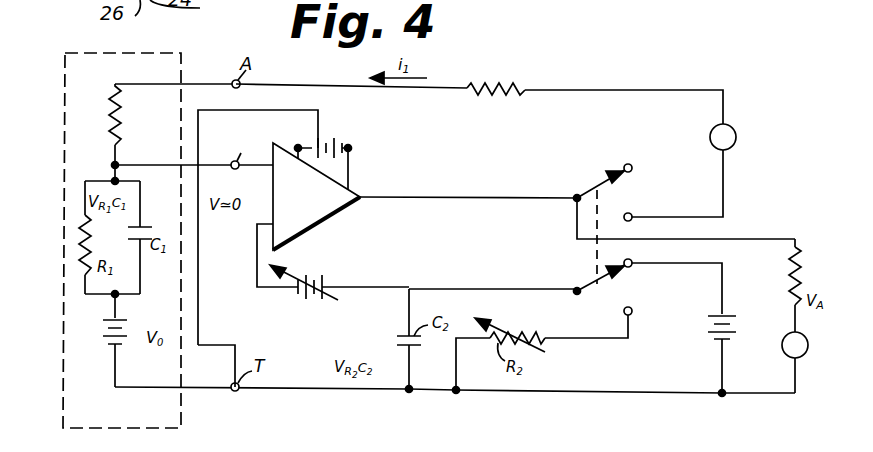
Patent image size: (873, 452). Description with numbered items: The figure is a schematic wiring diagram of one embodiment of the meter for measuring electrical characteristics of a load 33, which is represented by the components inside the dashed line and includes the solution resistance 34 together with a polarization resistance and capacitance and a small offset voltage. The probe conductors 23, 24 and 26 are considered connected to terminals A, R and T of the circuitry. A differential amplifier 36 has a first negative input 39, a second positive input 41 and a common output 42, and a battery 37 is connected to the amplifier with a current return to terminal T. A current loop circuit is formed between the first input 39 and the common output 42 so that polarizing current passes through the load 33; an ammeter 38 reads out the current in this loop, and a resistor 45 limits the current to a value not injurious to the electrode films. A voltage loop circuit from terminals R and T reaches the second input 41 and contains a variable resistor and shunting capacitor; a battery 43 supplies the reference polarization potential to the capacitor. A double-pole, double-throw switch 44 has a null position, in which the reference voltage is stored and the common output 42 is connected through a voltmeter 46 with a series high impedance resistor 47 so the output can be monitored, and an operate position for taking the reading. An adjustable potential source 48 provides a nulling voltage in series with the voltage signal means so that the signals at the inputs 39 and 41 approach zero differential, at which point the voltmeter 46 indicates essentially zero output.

The conductor 23 is at (138, 89).
The conductor 24 is at (132, 167).
The conductor 26 is at (131, 393).
The load 33 is at (64, 94).
The solution resistance 34 is at (108, 132).
The amplifier 36 is at (333, 211).
The battery 37 is at (332, 140).
The ammeter 38 is at (737, 133).
The first input 39 is at (262, 170).
The second input 41 is at (257, 240).
The common output 42 is at (403, 196).
The battery 43 is at (727, 338).
The double-pole, double-throw switch 44 is at (588, 188).
The resistor 45 is at (500, 86).
The voltmeter 46 is at (806, 353).
The high impedance resistor 47 is at (803, 281).
The adjustable potential source 48 is at (314, 300).